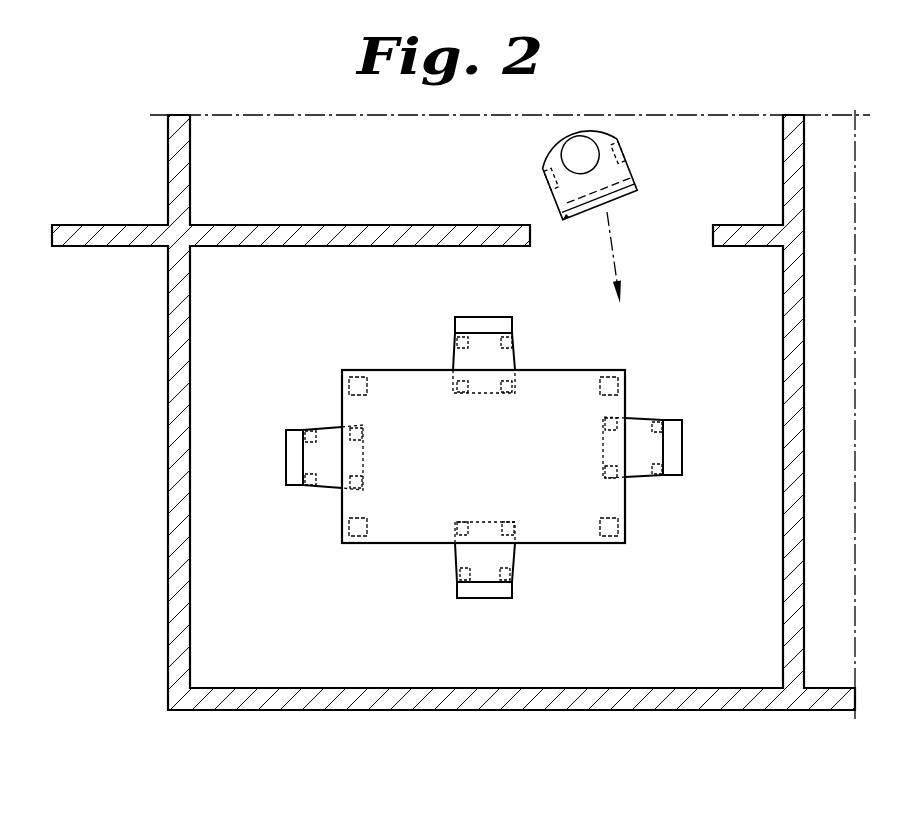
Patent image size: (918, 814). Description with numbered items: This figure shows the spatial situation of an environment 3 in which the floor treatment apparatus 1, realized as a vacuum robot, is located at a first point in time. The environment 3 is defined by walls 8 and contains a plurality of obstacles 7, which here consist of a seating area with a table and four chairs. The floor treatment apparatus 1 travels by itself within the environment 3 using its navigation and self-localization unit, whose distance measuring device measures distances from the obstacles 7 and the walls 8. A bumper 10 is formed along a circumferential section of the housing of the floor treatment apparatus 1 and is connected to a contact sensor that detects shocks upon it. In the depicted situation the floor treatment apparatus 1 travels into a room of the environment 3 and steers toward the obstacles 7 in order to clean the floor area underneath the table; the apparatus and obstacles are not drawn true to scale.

The floor treatment apparatus 1 is at (634, 132).
The environment 3 is at (212, 371).
The obstacles 7 is at (485, 342).
The wall 8 is at (793, 333).
The bumper 10 is at (610, 204).